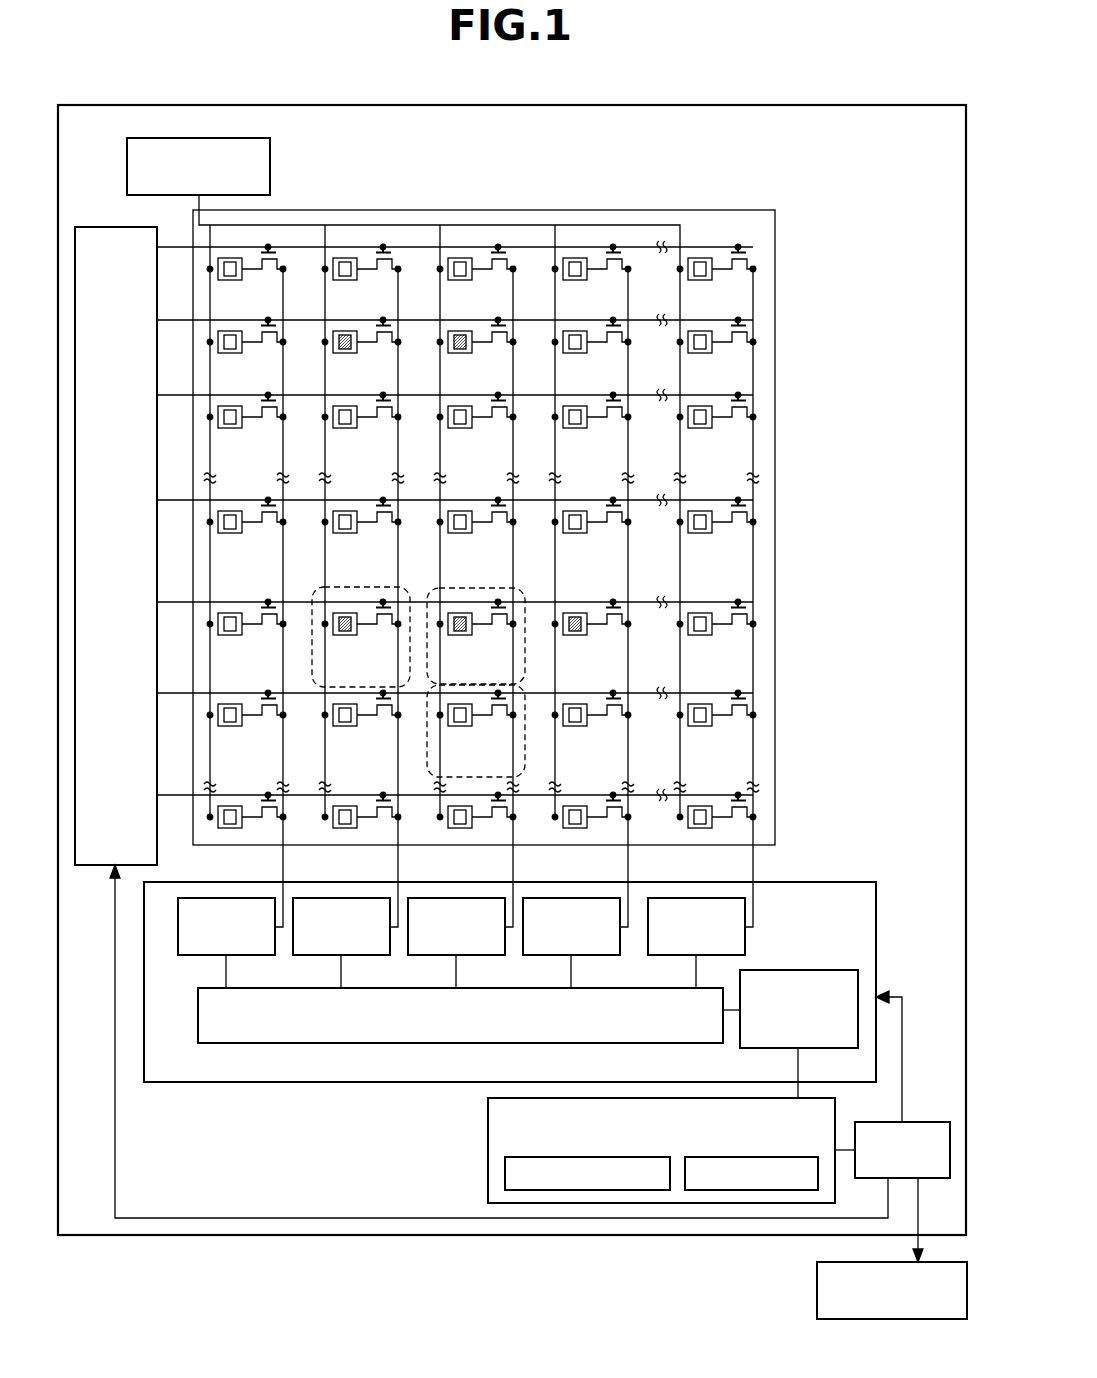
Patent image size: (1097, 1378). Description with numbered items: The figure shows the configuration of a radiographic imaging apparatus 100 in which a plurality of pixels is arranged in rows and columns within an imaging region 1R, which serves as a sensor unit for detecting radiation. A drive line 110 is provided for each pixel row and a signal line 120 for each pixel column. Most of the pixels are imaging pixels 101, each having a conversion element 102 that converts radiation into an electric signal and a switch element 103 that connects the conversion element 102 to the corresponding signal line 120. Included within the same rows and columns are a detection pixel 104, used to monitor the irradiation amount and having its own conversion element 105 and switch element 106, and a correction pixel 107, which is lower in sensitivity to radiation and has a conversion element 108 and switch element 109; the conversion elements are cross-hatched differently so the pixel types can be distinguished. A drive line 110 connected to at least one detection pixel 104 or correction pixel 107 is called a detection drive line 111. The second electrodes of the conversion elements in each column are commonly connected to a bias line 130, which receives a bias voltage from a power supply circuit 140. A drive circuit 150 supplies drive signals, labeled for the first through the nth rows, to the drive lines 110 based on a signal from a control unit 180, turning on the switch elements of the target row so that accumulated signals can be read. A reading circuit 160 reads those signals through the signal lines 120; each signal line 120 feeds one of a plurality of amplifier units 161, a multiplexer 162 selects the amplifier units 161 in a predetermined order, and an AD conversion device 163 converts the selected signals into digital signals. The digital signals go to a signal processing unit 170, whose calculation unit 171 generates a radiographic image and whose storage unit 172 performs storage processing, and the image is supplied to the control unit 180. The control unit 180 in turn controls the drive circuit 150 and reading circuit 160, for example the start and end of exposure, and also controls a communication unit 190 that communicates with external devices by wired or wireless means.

The radiographic imaging apparatus 100 is at (500, 104).
The imaging region 1R is at (742, 210).
The imaging pixel 101 is at (525, 758).
The conversion element 102 is at (460, 727).
The switch element 103 is at (500, 720).
The detection pixel 104 is at (357, 587).
The conversion element 105 is at (345, 637).
The switch element 106 is at (384, 630).
The correction pixel 107 is at (473, 588).
The conversion element 108 is at (460, 636).
The switch element 109 is at (500, 630).
The drive line 110 is at (201, 398).
The detection drive line 111 is at (243, 602).
The signal line 120 is at (398, 760).
The bias line 130 is at (680, 225).
The power supply circuit 140 is at (270, 163).
The drive circuit 150 is at (90, 867).
The reading circuit 160 is at (213, 1083).
The amplifier unit 161 is at (178, 957).
The multiplexer 162 is at (478, 988).
The AD conversion device 163 is at (802, 968).
The signal processing unit 170 is at (488, 1118).
The calculation unit 171 is at (565, 1157).
The storage unit 172 is at (740, 1157).
The control unit 180 is at (930, 1122).
The communication unit 190 is at (817, 1292).